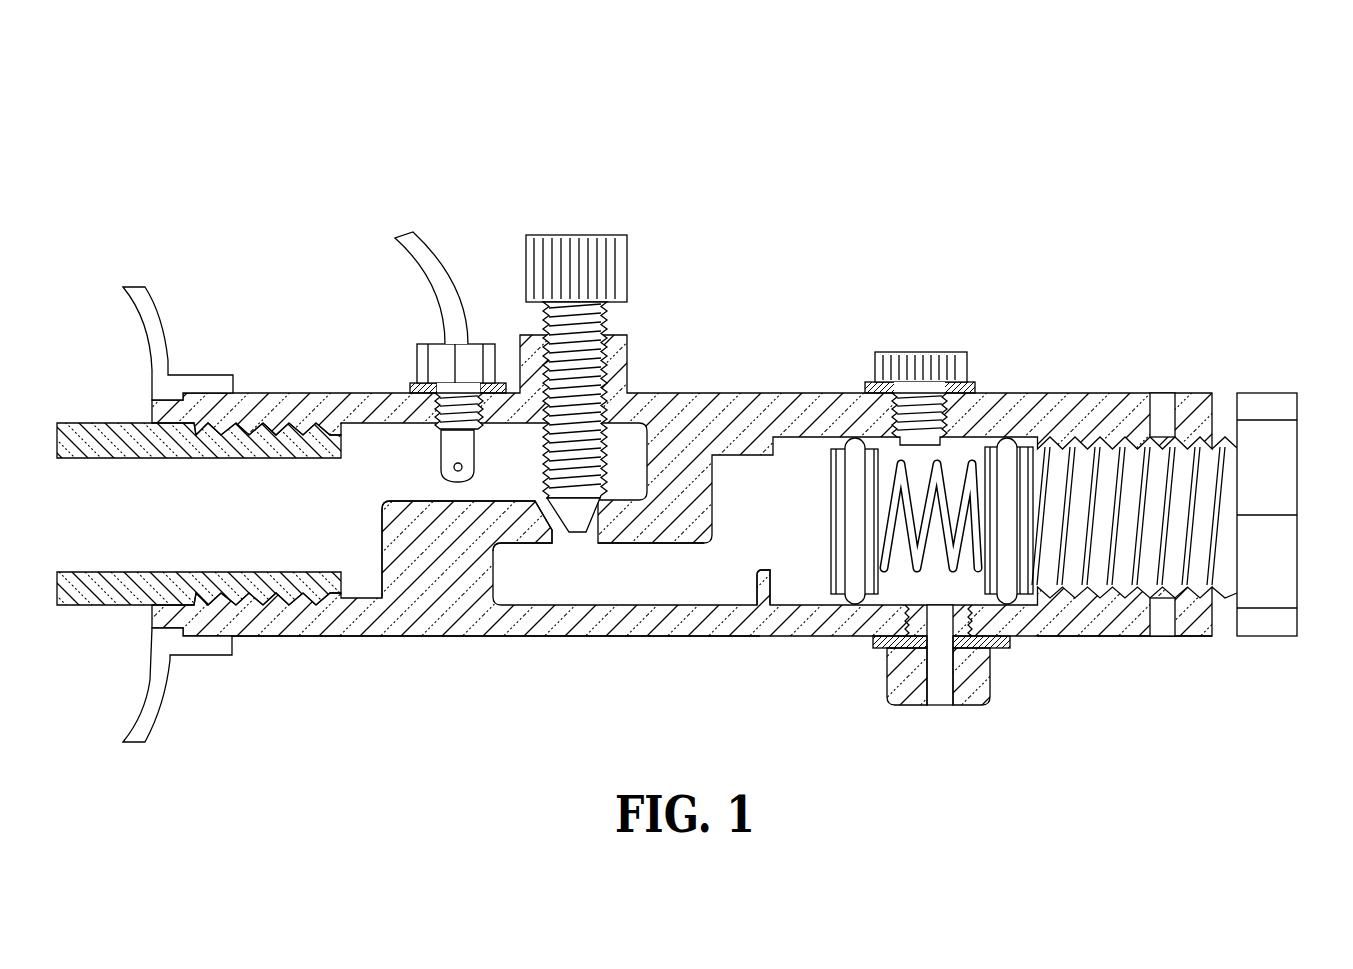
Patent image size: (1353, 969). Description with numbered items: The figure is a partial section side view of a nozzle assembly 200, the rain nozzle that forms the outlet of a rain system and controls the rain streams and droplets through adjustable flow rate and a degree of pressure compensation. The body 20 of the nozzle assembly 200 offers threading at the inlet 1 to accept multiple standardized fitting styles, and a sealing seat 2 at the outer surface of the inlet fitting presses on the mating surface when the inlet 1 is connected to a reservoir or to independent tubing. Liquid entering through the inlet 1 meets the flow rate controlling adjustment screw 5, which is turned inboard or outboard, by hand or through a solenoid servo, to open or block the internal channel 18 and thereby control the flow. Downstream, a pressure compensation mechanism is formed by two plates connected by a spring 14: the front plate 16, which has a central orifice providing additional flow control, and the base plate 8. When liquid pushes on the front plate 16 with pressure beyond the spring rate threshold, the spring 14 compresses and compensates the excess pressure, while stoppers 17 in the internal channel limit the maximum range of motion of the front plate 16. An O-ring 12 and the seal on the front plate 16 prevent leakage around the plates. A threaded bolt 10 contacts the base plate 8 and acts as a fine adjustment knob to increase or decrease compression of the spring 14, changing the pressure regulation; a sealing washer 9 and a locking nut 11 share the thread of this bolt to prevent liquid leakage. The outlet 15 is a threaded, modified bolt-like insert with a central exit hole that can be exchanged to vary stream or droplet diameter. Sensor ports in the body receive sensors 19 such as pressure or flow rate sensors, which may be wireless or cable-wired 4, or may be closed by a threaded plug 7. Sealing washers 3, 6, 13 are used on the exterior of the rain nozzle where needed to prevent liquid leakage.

The inlet 1 is at (72, 420).
The sealing seat 2 is at (137, 280).
The sealing washer 3 is at (404, 378).
The cable 4 is at (430, 235).
The flow rate controlling adjustment screw 5 is at (575, 230).
The sealing washer 6 is at (867, 384).
The threaded plug 7 is at (921, 347).
The base plate 8 is at (989, 441).
The sealing washer 9 is at (1163, 387).
The threaded bolt 10 is at (1303, 418).
The locking nut 11 is at (1192, 645).
The O-ring 12 is at (1008, 604).
The sealing washer 13 is at (1003, 654).
The spring 14 is at (943, 576).
The outlet 15 is at (907, 709).
The front plate 16 is at (854, 610).
The stoppers 17 is at (761, 585).
The internal channel 18 is at (534, 526).
The sensors 19 is at (459, 488).
The body 20 is at (288, 643).
The nozzle assembly 200 is at (1069, 128).